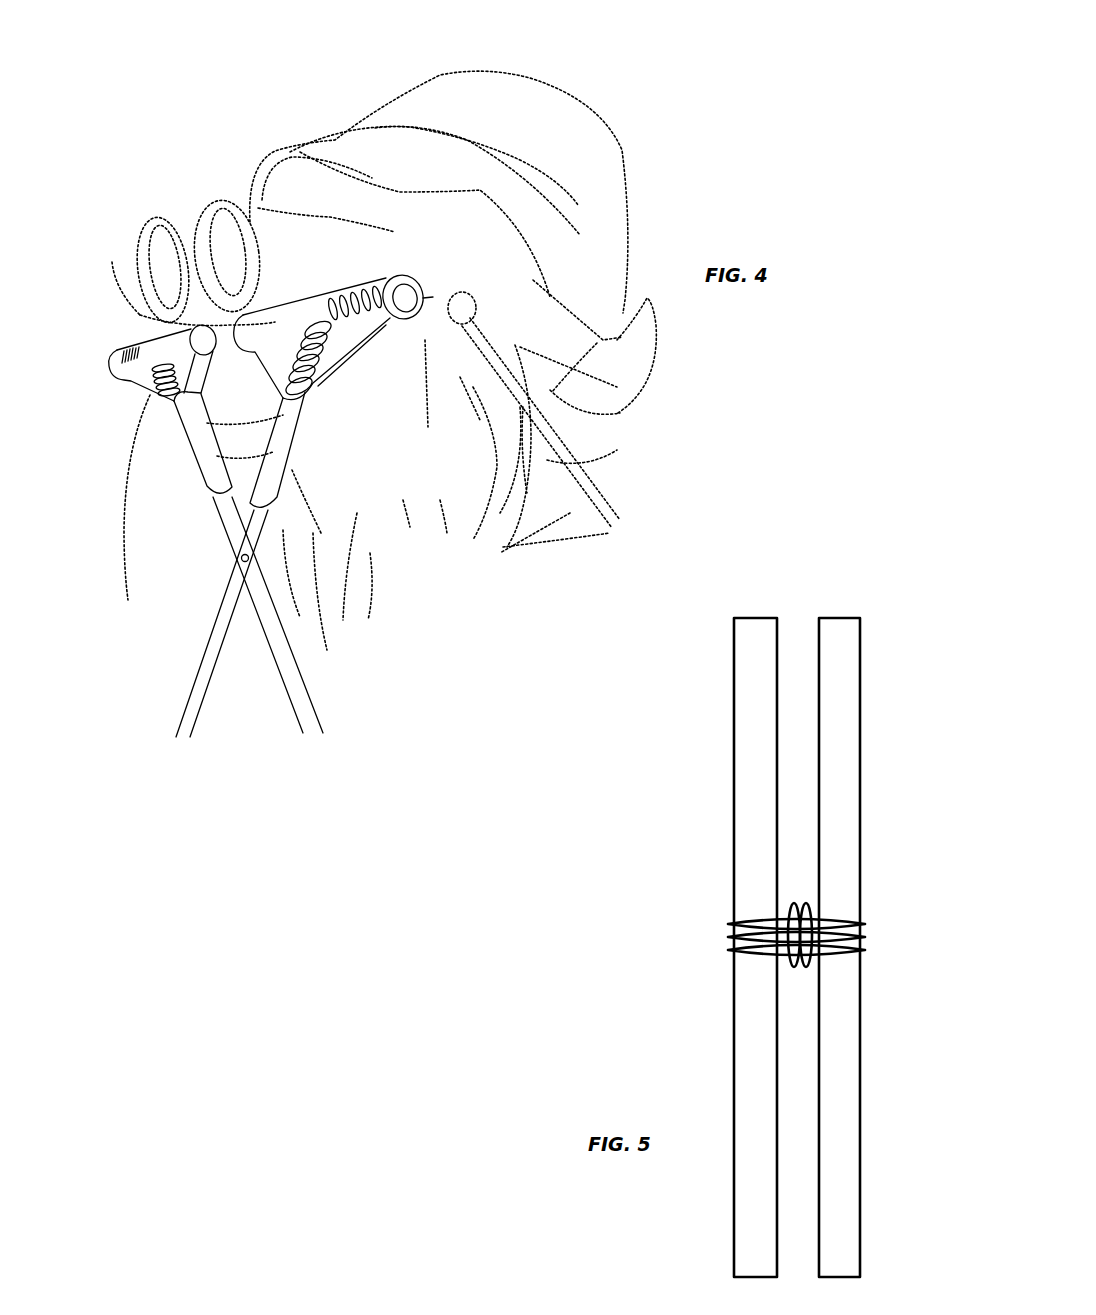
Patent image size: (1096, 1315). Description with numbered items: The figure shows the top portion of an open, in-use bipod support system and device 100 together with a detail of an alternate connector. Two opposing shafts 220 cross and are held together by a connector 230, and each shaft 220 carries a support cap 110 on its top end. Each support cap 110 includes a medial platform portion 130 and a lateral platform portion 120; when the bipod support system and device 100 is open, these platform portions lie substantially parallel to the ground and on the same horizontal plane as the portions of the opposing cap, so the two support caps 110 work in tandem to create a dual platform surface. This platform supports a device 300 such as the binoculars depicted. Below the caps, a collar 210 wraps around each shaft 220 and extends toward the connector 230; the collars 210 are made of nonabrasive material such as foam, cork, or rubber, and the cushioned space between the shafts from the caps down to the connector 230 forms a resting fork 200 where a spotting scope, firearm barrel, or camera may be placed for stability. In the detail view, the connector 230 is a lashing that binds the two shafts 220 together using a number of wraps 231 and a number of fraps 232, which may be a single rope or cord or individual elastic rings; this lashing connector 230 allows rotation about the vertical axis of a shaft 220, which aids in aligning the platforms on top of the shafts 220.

In FIG. 4, the bipod support system and device 100 is at (331, 424).
In FIG. 4, the support cap 110 is at (362, 283).
In FIG. 4, the lateral platform portion 120 is at (419, 273).
In FIG. 4, the medial platform portion 130 is at (263, 303).
In FIG. 4, the resting fork 200 is at (185, 454).
In FIG. 4, the collar 210 is at (300, 453).
In FIG. 4, the shaft 220 is at (322, 702).
In FIG. 5, the shaft 220 is at (748, 790).
In FIG. 4, the connector 230 is at (236, 560).
In FIG. 5, the connector 230 is at (777, 936).
In FIG. 5, the wraps 231 is at (847, 952).
In FIG. 5, the fraps 232 is at (790, 925).
In FIG. 4, the device 300 is at (247, 197).